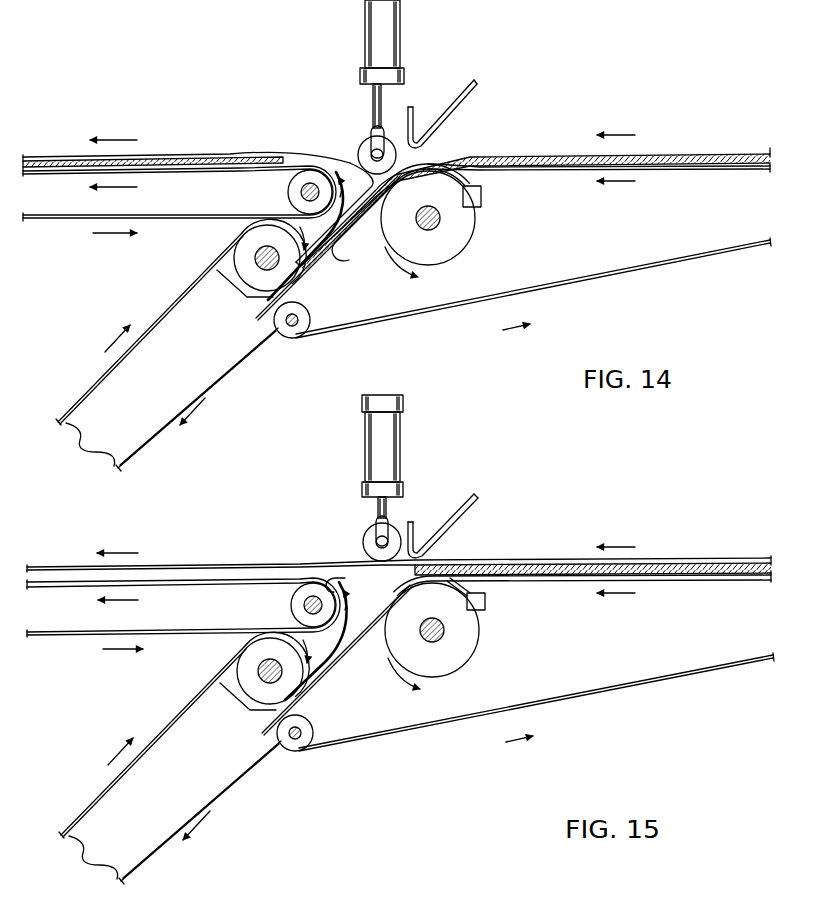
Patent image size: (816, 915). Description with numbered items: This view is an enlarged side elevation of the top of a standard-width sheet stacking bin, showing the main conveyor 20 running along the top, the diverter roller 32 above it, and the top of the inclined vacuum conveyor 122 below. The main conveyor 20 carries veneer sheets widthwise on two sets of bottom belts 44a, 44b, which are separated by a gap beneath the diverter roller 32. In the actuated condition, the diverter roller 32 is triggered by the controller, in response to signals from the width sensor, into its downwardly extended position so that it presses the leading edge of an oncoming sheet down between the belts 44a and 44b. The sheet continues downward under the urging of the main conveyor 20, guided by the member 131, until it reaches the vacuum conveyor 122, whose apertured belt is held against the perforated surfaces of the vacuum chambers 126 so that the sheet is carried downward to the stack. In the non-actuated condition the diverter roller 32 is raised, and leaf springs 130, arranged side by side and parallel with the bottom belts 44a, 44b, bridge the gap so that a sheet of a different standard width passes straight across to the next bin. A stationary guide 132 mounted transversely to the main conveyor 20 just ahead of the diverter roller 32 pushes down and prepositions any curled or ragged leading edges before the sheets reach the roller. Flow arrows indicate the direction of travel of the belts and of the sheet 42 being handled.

In FIG. 14, the main conveyor 20 is at (247, 150).
In FIG. 15, the main conveyor 20 is at (256, 562).
In FIG. 14, the web 42 is at (65, 156).
In FIG. 15, the web 42 is at (68, 567).
In FIG. 14, the bottom belts 44a is at (740, 170).
In FIG. 15, the bottom belts 44a is at (741, 582).
In FIG. 14, the bottom belts 44b is at (70, 173).
In FIG. 15, the bottom belts 44b is at (70, 586).
In FIG. 14, the diverter roller 32 is at (360, 150).
In FIG. 15, the diverter roller 32 is at (363, 548).
In FIG. 14, the stationary guide 132 is at (477, 87).
In FIG. 15, the stationary guide 132 is at (478, 503).
In FIG. 14, the leaf springs 130 is at (343, 258).
In FIG. 15, the leaf springs 130 is at (387, 580).
In FIG. 14, the guide member 131 is at (322, 266).
In FIG. 15, the guide member 131 is at (316, 672).
In FIG. 14, the vacuum chambers 126 is at (186, 371).
In FIG. 15, the vacuum chambers 126 is at (194, 785).
In FIG. 14, the vacuum conveyor 122 is at (219, 365).
In FIG. 15, the vacuum conveyor 122 is at (221, 778).